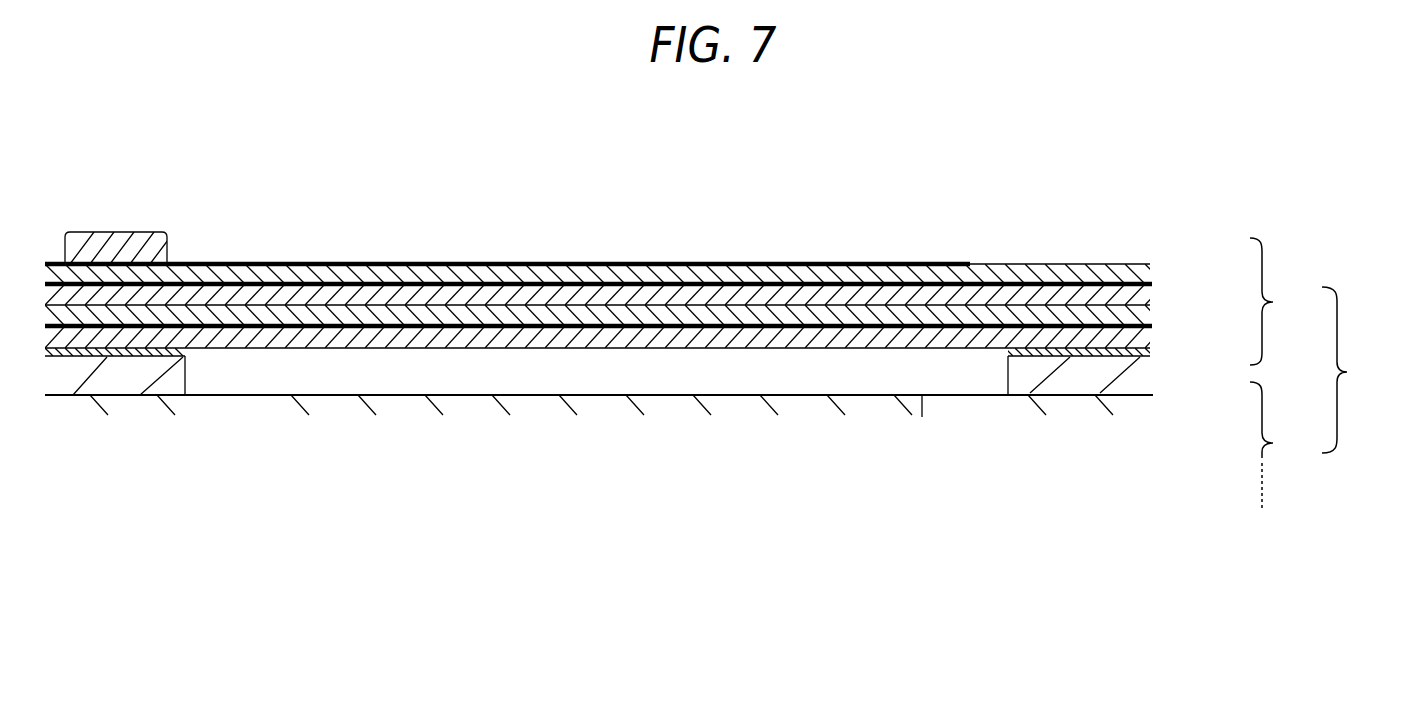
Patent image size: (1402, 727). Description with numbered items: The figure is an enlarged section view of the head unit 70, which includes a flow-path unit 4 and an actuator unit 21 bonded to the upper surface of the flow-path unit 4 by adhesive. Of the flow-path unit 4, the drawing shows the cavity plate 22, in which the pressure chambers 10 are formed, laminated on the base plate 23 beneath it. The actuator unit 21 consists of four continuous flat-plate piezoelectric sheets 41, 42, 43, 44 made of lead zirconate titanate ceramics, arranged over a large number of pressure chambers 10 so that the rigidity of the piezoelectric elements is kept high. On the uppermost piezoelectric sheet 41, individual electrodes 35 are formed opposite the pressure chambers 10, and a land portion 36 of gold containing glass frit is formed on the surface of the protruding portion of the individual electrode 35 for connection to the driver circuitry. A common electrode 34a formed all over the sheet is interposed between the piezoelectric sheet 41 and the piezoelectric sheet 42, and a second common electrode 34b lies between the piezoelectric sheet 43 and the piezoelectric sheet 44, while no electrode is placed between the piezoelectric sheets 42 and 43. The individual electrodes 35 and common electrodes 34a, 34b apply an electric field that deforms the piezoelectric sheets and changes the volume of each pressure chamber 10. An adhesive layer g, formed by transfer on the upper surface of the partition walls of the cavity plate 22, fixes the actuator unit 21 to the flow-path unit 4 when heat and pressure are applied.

The land portion 36 is at (95, 232).
The individual electrode 35 is at (393, 263).
The piezoelectric sheet 41 is at (1155, 273).
The piezoelectric sheet 42 is at (1155, 297).
The piezoelectric sheet 43 is at (1153, 315).
The piezoelectric sheet 44 is at (1153, 337).
The common electrode 34a is at (988, 280).
The common electrode 34b is at (1007, 322).
The adhesive layer g is at (105, 358).
The cavity plate 22 is at (1138, 373).
The base plate 23 is at (1125, 408).
The pressure chamber 10 is at (408, 395).
The actuator unit 21 is at (1282, 301).
The flow-path unit 4 is at (1276, 446).
The head unit 70 is at (1353, 370).